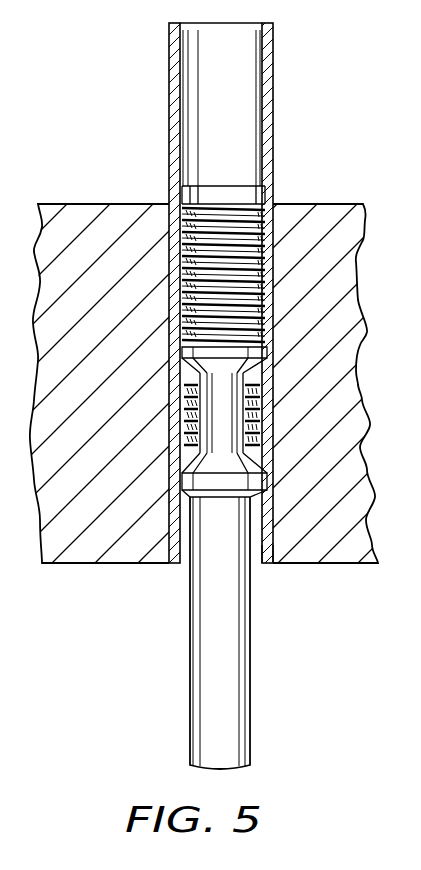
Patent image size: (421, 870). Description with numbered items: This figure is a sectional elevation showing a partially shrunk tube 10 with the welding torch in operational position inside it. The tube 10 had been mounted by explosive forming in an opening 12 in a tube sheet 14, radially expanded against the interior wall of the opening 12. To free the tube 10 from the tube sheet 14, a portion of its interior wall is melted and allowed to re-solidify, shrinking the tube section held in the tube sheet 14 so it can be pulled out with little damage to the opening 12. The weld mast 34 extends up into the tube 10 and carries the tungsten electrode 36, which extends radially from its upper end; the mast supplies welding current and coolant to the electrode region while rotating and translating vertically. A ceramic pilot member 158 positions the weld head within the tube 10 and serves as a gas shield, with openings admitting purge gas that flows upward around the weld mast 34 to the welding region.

The tube 10 is at (273, 100).
The opening 12 is at (258, 545).
The tube sheet 14 is at (103, 204).
The weld mast 34 is at (188, 622).
The tungsten electrode 36 is at (172, 433).
The ceramic pilot member 158 is at (170, 450).